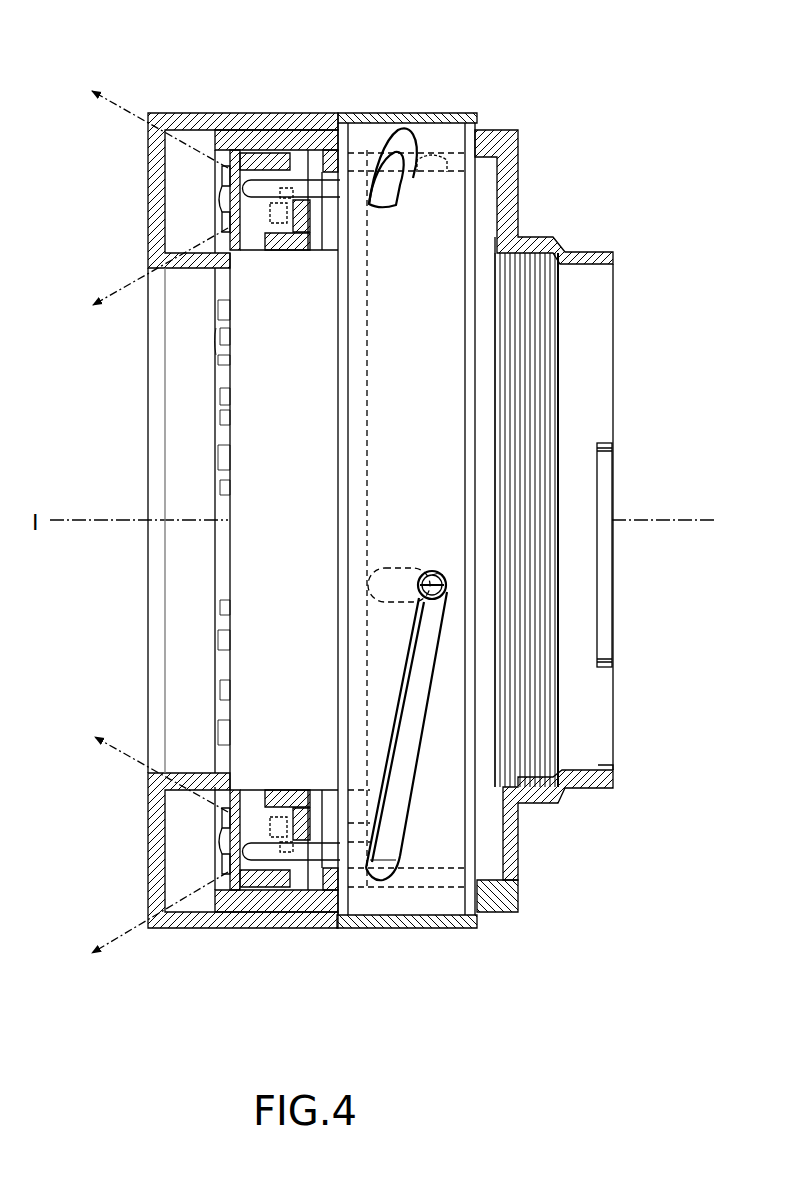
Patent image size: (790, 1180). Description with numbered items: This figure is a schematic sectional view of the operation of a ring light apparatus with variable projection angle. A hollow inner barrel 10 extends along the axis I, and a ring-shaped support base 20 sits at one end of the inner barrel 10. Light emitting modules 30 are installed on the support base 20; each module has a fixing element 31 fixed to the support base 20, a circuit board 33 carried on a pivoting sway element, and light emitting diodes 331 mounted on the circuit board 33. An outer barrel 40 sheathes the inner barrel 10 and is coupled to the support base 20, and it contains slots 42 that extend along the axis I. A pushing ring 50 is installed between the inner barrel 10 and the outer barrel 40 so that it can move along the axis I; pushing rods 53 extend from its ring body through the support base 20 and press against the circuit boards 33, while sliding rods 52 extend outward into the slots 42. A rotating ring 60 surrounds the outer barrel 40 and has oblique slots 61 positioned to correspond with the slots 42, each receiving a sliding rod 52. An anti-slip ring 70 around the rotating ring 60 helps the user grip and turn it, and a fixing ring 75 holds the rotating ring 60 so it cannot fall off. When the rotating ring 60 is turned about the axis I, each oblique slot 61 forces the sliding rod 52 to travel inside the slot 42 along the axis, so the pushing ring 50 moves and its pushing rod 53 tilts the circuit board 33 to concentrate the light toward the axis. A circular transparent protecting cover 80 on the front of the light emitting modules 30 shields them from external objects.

The inner barrel 10 is at (258, 573).
The support base 20 is at (305, 118).
The light emitting module 30 is at (222, 234).
The fixing element 31 is at (236, 160).
The circuit board 33 is at (227, 224).
The light emitting diode 331 is at (227, 176).
The outer barrel 40 is at (520, 850).
The slot 42 is at (412, 565).
The pushing ring 50 is at (437, 217).
The sliding rod 52 is at (442, 582).
The pushing rod 53 is at (265, 180).
The rotating ring 60 is at (440, 855).
The oblique slot 61 is at (379, 152).
The anti-slip ring 70 is at (436, 113).
The fixing ring 75 is at (497, 905).
The protecting cover 80 is at (197, 113).